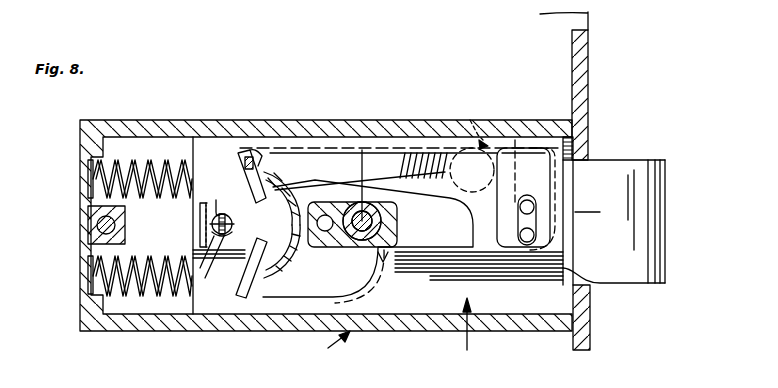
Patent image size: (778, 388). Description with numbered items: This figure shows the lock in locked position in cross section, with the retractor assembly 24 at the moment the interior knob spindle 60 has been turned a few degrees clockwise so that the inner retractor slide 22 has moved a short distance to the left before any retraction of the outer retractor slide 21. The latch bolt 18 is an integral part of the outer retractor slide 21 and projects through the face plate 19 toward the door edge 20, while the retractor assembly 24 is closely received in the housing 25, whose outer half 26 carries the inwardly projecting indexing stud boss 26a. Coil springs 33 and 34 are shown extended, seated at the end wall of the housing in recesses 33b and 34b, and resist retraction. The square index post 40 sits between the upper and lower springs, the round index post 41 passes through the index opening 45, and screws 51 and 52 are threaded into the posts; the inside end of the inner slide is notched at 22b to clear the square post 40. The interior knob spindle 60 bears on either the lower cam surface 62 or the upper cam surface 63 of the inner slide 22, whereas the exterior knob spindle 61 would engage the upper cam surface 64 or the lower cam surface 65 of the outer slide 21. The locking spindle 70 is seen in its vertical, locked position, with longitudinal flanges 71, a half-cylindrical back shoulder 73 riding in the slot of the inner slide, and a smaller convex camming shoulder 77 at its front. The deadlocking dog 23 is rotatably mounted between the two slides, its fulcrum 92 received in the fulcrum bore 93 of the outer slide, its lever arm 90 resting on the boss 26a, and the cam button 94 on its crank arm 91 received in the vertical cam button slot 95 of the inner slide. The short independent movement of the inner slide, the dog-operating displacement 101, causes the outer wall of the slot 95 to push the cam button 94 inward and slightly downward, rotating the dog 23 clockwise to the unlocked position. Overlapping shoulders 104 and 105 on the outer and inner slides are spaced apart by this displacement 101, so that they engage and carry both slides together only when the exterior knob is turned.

The latch bolt 18 is at (635, 160).
The face plate 19 is at (584, 104).
The door edge 20 is at (645, 243).
The outer retractor slide 21 is at (582, 300).
The inner retractor slide 22 is at (196, 312).
The notch of inner retractor slide 22b is at (198, 226).
The deadlocking dog 23 is at (430, 140).
The retractor assembly 24 is at (475, 329).
The housing 25 is at (323, 347).
The outer housing half 26 is at (390, 316).
The indexing stud boss 26a is at (392, 228).
The coil spring 33 is at (140, 165).
The spring recess in housing end wall 33b is at (90, 180).
The coil spring 34 is at (145, 297).
The spring recess in housing end wall 34b is at (90, 283).
The square index post 40 is at (90, 213).
The round index post 41 is at (384, 262).
The index opening 45 is at (372, 219).
The screw 51 is at (115, 226).
The screw 52 is at (398, 160).
The interior knob spindle 60 is at (305, 185).
The exterior knob spindle 61 is at (262, 168).
The lower retractor cam surface 62 is at (250, 160).
The upper retractor cam surface 63 is at (245, 270).
The upper retractor cam surface 64 is at (282, 180).
The lower cam surface 65 is at (272, 262).
The locking spindle 70 is at (236, 221).
The longitudinal flanges 71 is at (208, 265).
The longitudinal shoulder 73 is at (216, 200).
The camming shoulder 77 is at (234, 228).
The lever arm 90 is at (343, 160).
The crank arm 91 is at (498, 196).
The fulcrum 92 is at (476, 126).
The fulcrum bore 93 is at (518, 136).
The cam button 94 is at (532, 240).
The cam button slot 95 is at (530, 212).
The dog-operating displacement 101 is at (570, 150).
The shoulder of outer retractor slide 104 is at (578, 213).
The shoulder of inner retractor slide 105 is at (600, 283).